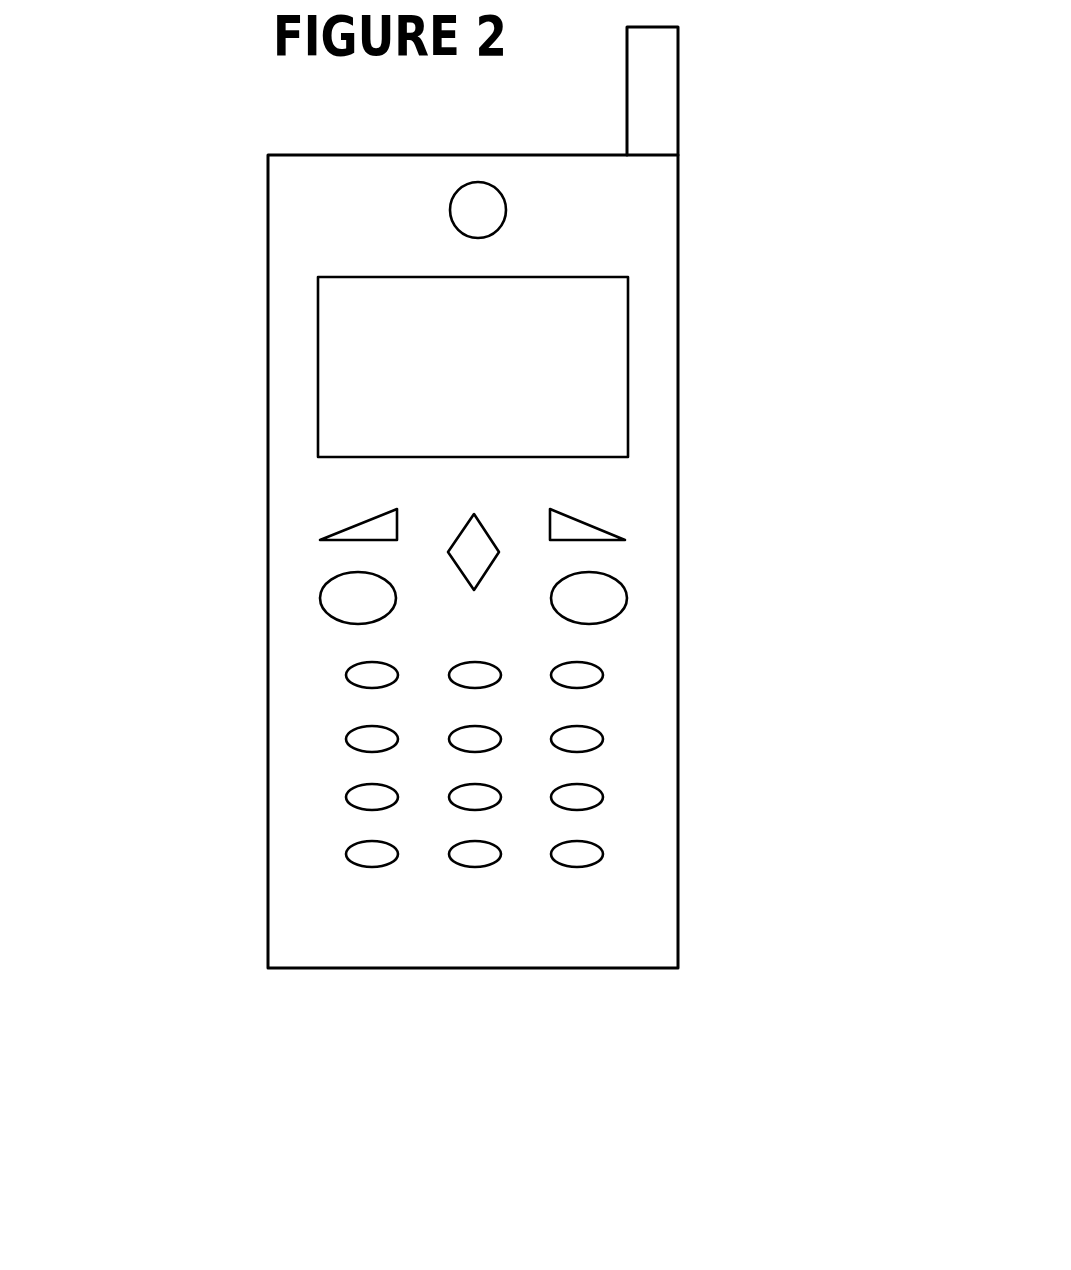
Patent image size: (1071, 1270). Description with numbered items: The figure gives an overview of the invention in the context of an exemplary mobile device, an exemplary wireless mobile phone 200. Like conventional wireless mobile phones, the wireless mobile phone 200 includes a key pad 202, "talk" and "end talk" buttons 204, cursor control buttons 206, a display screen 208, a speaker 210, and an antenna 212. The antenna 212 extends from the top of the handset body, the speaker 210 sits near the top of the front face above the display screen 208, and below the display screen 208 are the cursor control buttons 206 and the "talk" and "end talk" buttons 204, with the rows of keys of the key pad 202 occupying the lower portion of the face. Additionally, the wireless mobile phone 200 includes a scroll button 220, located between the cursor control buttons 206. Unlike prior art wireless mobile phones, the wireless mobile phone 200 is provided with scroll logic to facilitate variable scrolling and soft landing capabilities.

The wireless mobile phone 200 is at (393, 968).
The key pad 202 is at (348, 737).
The "talk" and "end talk" buttons 204 is at (332, 588).
The cursor control buttons 206 is at (352, 533).
The display screen 208 is at (588, 318).
The speaker 210 is at (466, 210).
The antenna 212 is at (678, 98).
The scroll button 220 is at (492, 532).